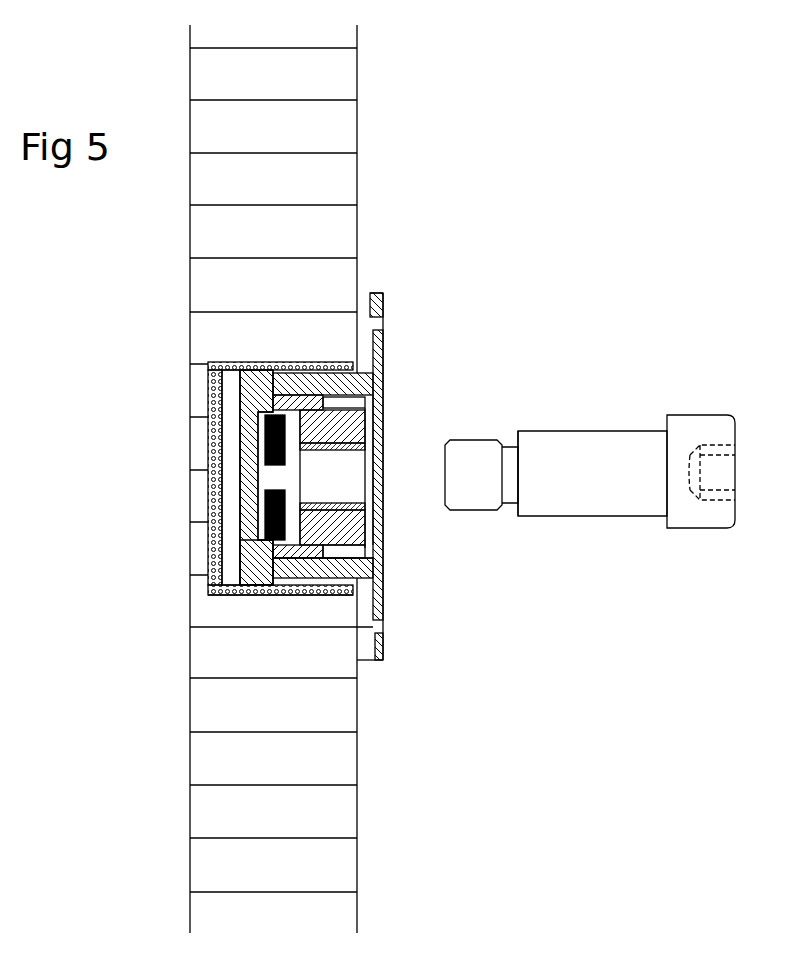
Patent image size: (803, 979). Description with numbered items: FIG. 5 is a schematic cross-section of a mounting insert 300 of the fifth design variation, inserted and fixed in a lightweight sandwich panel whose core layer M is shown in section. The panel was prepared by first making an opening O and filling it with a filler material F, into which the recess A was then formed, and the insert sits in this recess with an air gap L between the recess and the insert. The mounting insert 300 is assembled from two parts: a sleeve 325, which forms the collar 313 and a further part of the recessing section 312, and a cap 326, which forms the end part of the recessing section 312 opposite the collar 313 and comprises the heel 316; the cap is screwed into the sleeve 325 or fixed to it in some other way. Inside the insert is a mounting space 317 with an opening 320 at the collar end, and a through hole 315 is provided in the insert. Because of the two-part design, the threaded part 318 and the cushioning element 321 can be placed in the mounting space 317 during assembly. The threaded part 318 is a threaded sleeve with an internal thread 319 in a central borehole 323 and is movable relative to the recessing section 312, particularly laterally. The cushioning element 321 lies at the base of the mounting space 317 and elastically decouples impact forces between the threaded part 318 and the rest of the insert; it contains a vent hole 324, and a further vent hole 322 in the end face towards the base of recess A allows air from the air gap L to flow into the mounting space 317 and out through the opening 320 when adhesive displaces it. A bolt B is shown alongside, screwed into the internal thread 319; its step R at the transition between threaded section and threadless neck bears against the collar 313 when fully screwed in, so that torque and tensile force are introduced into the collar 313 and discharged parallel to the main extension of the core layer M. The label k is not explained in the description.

The core layer M is at (350, 174).
The mounting insert 300 is at (275, 509).
The opening O is at (258, 593).
The filler material F is at (232, 432).
The air gap L is at (230, 400).
The heel 316 is at (252, 375).
The vent hole 322 is at (266, 470).
The vent hole 324 is at (272, 497).
The cushioning element 321 is at (272, 520).
The recessing section 312 is at (302, 378).
The mounting space 317 is at (362, 403).
The borehole 323 is at (352, 483).
The internal thread 319 is at (348, 448).
The threaded part 318 is at (357, 530).
The opening 320 is at (380, 506).
The collar 313 is at (380, 606).
The through hole 315 is at (387, 310).
The edge k is at (374, 316).
The cap 326 is at (246, 575).
The recess A is at (327, 575).
The sleeve 325 is at (322, 593).
The bolt B is at (620, 516).
The step R is at (518, 432).